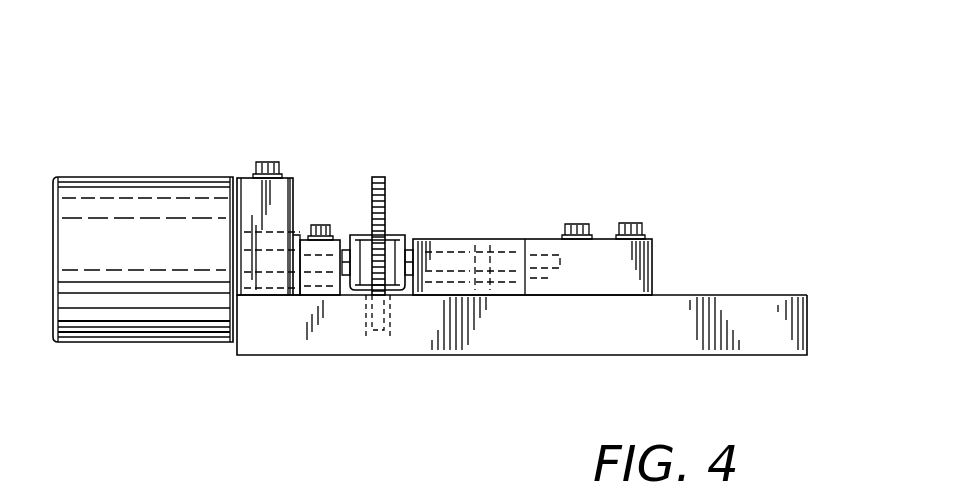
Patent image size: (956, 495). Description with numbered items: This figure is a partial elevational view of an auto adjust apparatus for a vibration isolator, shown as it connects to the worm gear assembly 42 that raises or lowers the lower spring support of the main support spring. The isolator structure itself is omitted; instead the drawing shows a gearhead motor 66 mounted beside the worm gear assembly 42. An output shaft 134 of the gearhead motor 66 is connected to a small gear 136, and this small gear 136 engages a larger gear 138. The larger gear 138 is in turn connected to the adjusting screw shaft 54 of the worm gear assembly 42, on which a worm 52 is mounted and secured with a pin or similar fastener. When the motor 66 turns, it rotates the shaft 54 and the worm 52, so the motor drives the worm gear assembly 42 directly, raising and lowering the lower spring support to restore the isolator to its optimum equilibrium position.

The worm gear assembly 42 is at (672, 228).
The worm 52 is at (510, 240).
The adjusting screw shaft 54 is at (408, 296).
The gearhead motor 66 is at (105, 190).
The output shaft 134 is at (345, 240).
The small gear 136 is at (397, 240).
The larger gear 138 is at (378, 177).